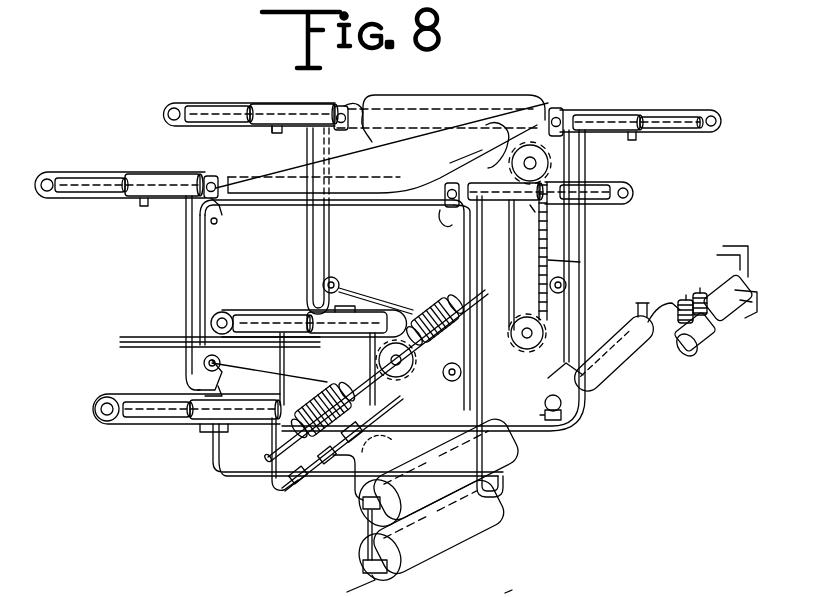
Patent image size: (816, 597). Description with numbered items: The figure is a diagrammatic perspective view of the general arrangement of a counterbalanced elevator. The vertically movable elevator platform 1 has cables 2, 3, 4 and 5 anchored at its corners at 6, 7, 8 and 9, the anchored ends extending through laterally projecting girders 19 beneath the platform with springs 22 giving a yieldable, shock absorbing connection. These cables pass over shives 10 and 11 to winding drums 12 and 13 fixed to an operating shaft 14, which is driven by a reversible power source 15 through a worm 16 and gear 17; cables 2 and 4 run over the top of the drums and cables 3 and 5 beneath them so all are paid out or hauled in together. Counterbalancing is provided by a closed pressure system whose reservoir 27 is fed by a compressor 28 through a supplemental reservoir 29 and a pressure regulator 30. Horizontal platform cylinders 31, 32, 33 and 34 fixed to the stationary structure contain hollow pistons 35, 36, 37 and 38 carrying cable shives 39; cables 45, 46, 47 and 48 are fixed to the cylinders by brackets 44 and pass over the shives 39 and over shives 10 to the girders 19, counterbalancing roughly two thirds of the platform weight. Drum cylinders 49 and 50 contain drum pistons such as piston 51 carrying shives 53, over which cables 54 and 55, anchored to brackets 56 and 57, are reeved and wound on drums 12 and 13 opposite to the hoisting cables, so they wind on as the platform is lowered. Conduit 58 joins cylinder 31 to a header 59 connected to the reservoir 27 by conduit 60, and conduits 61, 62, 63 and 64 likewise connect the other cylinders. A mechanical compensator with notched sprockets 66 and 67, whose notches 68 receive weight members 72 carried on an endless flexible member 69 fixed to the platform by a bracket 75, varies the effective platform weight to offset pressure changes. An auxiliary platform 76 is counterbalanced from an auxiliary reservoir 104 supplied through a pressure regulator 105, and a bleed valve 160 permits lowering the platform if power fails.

The elevator platform 1 is at (520, 100).
The cable 2 is at (208, 262).
The cable 3 is at (462, 263).
The cable 4 is at (325, 172).
The cable 5 is at (587, 168).
The cable anchor 6 is at (224, 213).
The cable anchor 7 is at (438, 214).
The cable anchor 8 is at (372, 142).
The cable anchor 9 is at (571, 147).
The shive 10 is at (343, 106).
The shive 11 is at (196, 386).
The winding drum 12 is at (306, 437).
The winding drum 13 is at (418, 320).
The operating shaft 14 is at (350, 400).
The power source 15 is at (285, 378).
The worm 16 is at (398, 380).
The gear 17 is at (443, 370).
The girder 19 is at (462, 100).
The spring 22 is at (232, 238).
The reservoir 27 is at (448, 458).
The compressor 28 is at (712, 322).
The supplemental reservoir 29 is at (615, 365).
The pressure regulator 30 is at (560, 422).
The platform cylinder 31 is at (168, 198).
The platform cylinder 32 is at (498, 200).
The platform cylinder 33 is at (330, 118).
The platform cylinder 34 is at (600, 116).
The piston 35 is at (88, 178).
The piston 36 is at (612, 192).
The piston 37 is at (258, 106).
The piston 38 is at (672, 118).
The cable shive 39 is at (172, 108).
The bracket 44 is at (143, 206).
The cable 45 is at (70, 198).
The cable 46 is at (590, 207).
The cable 47 is at (686, 135).
The cable 48 is at (205, 100).
The drum cylinder 49 is at (248, 420).
The drum cylinder 50 is at (355, 310).
The drum piston 51 is at (155, 418).
The shive 53 is at (78, 403).
The cable 54 is at (172, 424).
The cable 55 is at (300, 312).
The bracket 56 is at (208, 432).
The bracket 57 is at (345, 302).
The conduit 58 is at (184, 286).
The header 59 is at (305, 484).
The conduit 60 is at (355, 512).
The conduit 61 is at (478, 252).
The conduit 62 is at (306, 243).
The conduit 63 is at (584, 262).
The conduit 64 is at (268, 484).
The sprocket 66 is at (487, 140).
The sprocket 67 is at (640, 335).
The notch 68 is at (537, 108).
The flexible member 69 is at (522, 262).
The weight member 72 is at (548, 250).
The bracket 75 is at (450, 163).
The platform 76 is at (524, 586).
The auxiliary reservoir 104 is at (400, 438).
The pressure regulator 105 is at (540, 362).
The bleed valve 160 is at (347, 592).